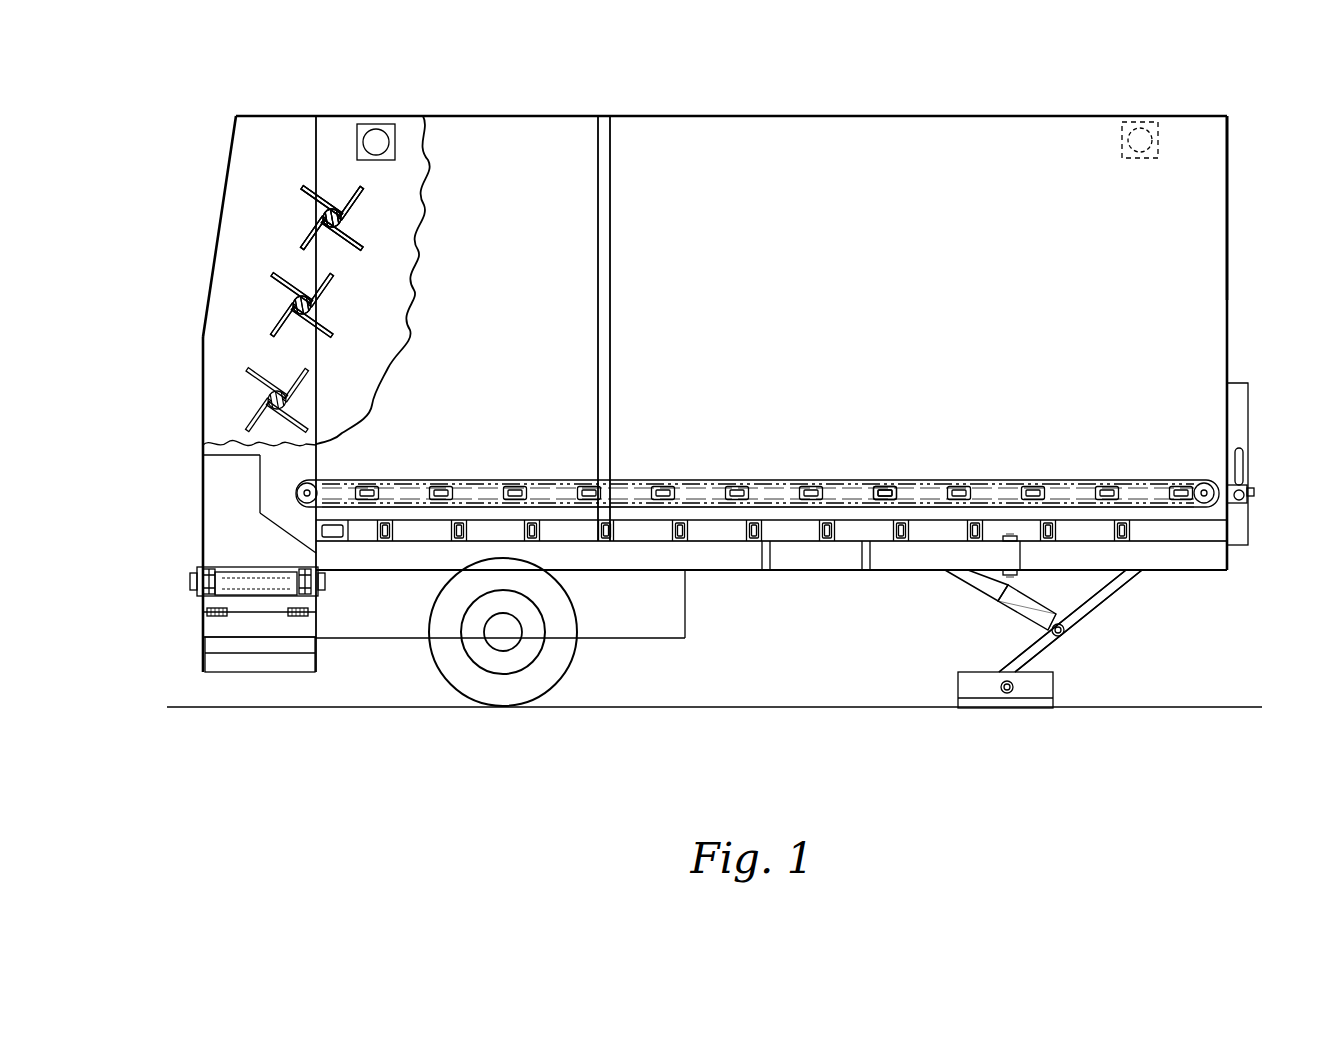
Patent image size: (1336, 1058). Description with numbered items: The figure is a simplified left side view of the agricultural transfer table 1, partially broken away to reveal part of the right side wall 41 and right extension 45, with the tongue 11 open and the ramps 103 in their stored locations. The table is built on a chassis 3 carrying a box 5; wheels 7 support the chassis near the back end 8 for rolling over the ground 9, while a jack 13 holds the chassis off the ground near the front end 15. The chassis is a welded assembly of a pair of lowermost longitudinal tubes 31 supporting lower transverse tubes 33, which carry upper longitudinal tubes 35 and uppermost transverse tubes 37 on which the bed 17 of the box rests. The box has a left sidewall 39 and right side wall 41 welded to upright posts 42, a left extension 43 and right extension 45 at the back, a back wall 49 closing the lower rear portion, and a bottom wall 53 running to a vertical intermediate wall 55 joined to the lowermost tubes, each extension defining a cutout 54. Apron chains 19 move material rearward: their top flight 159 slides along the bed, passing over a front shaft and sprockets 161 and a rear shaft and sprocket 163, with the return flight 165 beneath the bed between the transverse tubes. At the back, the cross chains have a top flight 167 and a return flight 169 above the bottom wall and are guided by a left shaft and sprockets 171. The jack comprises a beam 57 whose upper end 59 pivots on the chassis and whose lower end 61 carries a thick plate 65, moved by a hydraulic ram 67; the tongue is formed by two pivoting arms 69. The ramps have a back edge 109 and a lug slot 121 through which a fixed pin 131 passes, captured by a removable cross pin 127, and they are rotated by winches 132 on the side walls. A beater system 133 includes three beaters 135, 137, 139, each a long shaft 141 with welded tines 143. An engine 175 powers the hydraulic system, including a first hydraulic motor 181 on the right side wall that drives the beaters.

The agricultural transfer table 1 is at (830, 572).
The chassis 3 is at (1161, 578).
The box 5 is at (700, 110).
The wheels 7 is at (546, 682).
The back end 8 is at (226, 178).
The ground 9 is at (800, 742).
The tongue 11 is at (760, 555).
The jack 13 is at (1058, 688).
The front end 15 is at (1230, 184).
The bed 17 is at (824, 480).
The apron chains 19 is at (993, 480).
The lowermost longitudinal tubes 31 is at (722, 566).
The lower transverse tubes 33 is at (902, 538).
The upper longitudinal tubes 35 is at (928, 512).
The uppermost transverse tubes 37 is at (884, 486).
The left sidewall 39 is at (918, 285).
The right side wall 41 is at (418, 130).
The upright posts 42 is at (600, 148).
The left extension 43 is at (280, 485).
The right extension 45 is at (268, 146).
The back wall 49 is at (202, 400).
The bottom wall 53 is at (278, 612).
The cutout 54 is at (258, 475).
The vertical intermediate wall 55 is at (313, 557).
The beam 57 is at (1047, 650).
The upper end 59 is at (1093, 595).
The lower end 61 is at (1028, 658).
The thick plate 65 is at (957, 690).
The hydraulic ram 67 is at (965, 585).
The arms 69 is at (1026, 556).
The ramps 103 is at (1244, 380).
The back edge 109 is at (1249, 412).
The slot 121 is at (1243, 468).
The cross pin 127 is at (1255, 492).
The fixed pin 131 is at (1246, 497).
The winches 132 is at (1140, 140).
The beater system 133 is at (270, 322).
The beater 135 is at (354, 218).
The beater 137 is at (332, 306).
The beater 139 is at (302, 400).
The long shaft 141 is at (318, 206).
The tines 143 is at (310, 183).
The top flight 159 is at (734, 486).
The front shaft and sprockets 161 is at (1205, 482).
The rear shaft and sprocket 163 is at (314, 483).
The return flight 165 is at (560, 500).
The top flight 167 is at (223, 565).
The return flight 169 is at (240, 598).
The left shaft and sprockets 171 is at (262, 590).
The engine 175 is at (662, 626).
The first hydraulic motor 181 is at (377, 140).